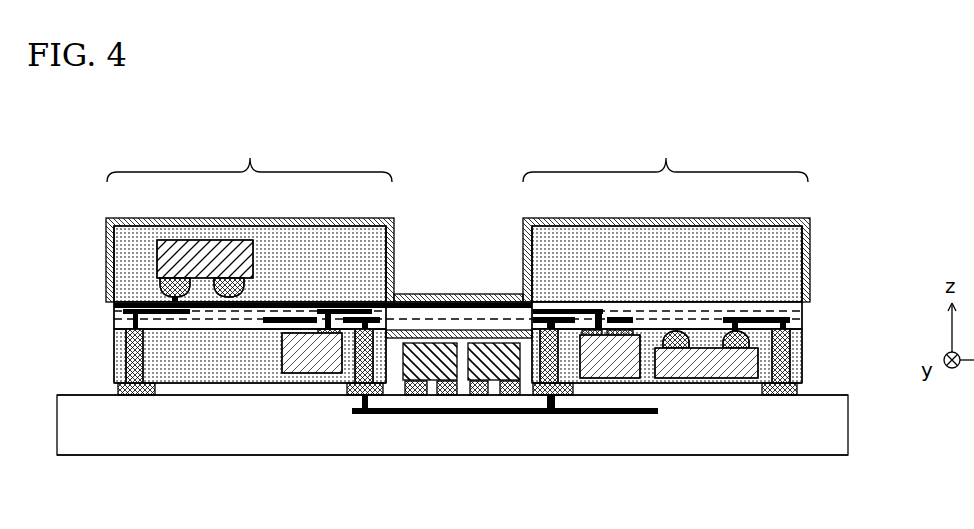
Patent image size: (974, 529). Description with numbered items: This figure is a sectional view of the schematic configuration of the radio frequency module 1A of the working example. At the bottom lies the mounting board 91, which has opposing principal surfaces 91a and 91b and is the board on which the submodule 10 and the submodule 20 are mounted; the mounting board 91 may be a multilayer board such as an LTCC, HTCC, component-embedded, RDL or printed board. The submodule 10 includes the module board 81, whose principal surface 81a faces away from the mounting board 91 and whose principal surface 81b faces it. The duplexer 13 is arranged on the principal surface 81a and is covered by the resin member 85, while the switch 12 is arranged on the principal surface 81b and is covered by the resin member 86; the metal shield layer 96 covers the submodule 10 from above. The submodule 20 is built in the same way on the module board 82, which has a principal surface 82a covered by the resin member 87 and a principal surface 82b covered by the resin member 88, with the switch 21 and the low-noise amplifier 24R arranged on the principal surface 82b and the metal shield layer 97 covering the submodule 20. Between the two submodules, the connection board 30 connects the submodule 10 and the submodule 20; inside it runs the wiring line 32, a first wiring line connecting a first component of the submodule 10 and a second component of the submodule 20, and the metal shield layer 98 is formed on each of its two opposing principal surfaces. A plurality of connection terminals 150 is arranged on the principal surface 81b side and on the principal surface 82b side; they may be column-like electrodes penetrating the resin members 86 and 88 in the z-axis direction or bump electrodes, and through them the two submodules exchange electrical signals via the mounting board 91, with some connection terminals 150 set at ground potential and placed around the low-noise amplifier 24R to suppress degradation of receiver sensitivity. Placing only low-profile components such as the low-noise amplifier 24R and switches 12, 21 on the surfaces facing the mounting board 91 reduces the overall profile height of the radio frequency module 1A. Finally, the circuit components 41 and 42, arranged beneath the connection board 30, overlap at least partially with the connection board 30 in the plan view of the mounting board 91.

The radio frequency module 1A is at (851, 149).
The submodule 10 is at (249, 155).
The submodule 20 is at (665, 155).
The duplexer 13 is at (183, 257).
The metal shield layer 96 is at (237, 219).
The metal shield layer 97 is at (653, 219).
The metal shield layer 98 is at (500, 298).
The resin member 85 is at (127, 238).
The resin member 87 is at (786, 243).
The module board 81 is at (116, 313).
The principal surface 81a is at (122, 302).
The principal surface 81b is at (118, 330).
The module board 82 is at (803, 314).
The principal surface 82a is at (790, 300).
The principal surface 82b is at (803, 330).
The resin member 86 is at (152, 352).
The resin member 88 is at (770, 345).
The wiring line 32 is at (413, 304).
The connection board 30 is at (457, 318).
The switch 12 is at (297, 372).
The circuit component 41 is at (437, 376).
The circuit component 42 is at (493, 372).
The switch 21 is at (617, 370).
The low-noise amplifier 24R is at (712, 372).
The connection terminal 150 is at (138, 388).
The mounting board 91 is at (822, 437).
The principal surface 91a is at (823, 393).
The principal surface 91b is at (820, 455).